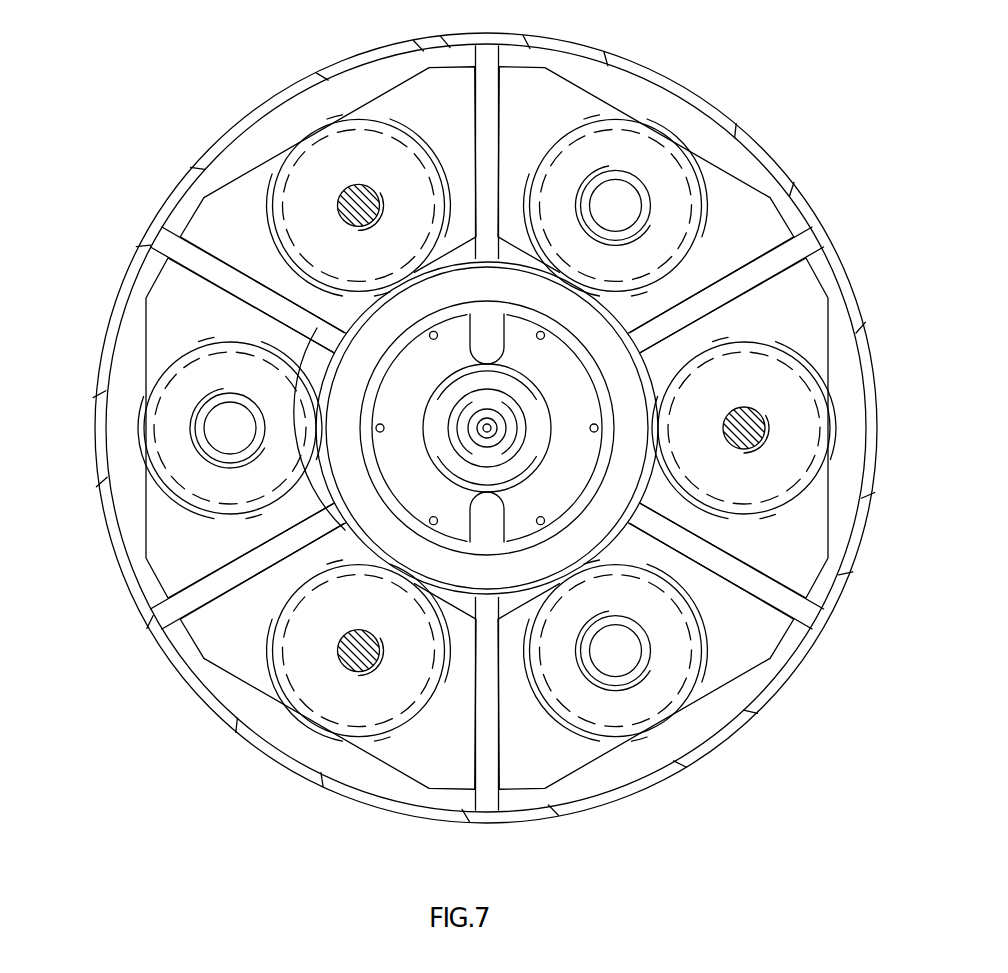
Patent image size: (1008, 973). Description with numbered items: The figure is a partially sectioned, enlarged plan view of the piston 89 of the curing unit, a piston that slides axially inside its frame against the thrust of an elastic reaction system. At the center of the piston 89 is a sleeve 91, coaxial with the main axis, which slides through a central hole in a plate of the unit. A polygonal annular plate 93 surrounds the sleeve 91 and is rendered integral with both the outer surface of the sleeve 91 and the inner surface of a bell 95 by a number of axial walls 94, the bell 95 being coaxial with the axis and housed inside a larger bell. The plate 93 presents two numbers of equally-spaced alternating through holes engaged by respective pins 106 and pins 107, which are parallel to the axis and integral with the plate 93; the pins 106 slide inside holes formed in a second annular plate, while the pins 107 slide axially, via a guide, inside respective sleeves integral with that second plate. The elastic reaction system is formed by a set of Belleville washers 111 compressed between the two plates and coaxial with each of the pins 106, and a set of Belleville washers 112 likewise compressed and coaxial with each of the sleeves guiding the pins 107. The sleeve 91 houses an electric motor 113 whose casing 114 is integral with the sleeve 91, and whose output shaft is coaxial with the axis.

The piston 89 is at (493, 428).
The sleeve 91 is at (630, 480).
The polygonal annular plate 93 is at (218, 200).
The axial walls 94 is at (490, 53).
The bell 95 is at (845, 268).
The pins 106 is at (356, 195).
The pins 107 is at (625, 200).
The Belleville washers 111 is at (360, 135).
The Belleville washers 112 is at (612, 130).
The electric motor 113 is at (354, 473).
The casing 114 is at (486, 542).